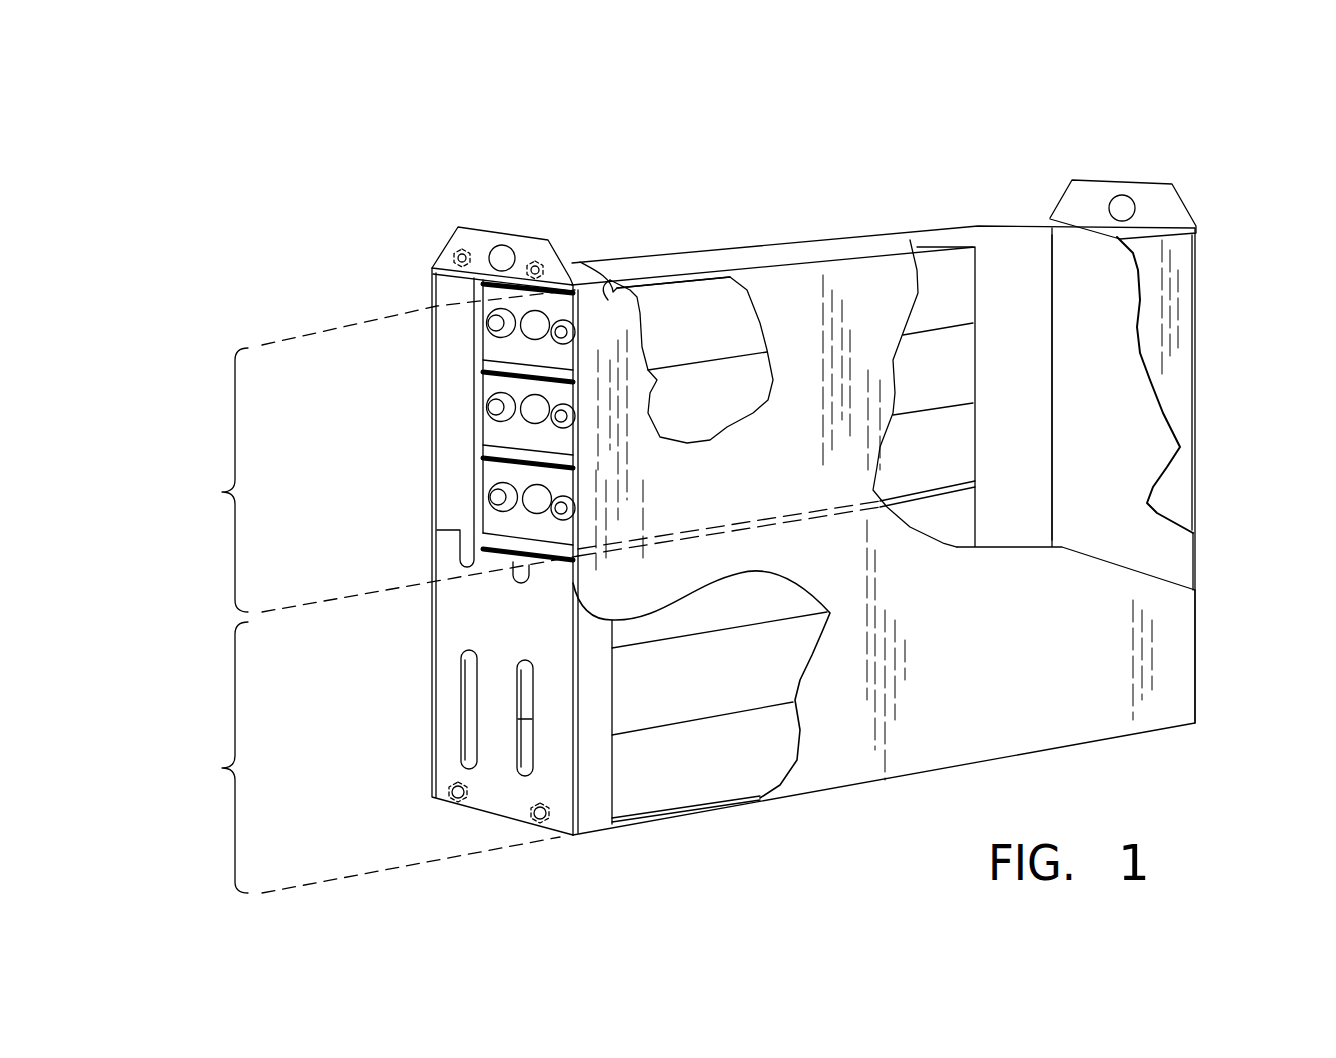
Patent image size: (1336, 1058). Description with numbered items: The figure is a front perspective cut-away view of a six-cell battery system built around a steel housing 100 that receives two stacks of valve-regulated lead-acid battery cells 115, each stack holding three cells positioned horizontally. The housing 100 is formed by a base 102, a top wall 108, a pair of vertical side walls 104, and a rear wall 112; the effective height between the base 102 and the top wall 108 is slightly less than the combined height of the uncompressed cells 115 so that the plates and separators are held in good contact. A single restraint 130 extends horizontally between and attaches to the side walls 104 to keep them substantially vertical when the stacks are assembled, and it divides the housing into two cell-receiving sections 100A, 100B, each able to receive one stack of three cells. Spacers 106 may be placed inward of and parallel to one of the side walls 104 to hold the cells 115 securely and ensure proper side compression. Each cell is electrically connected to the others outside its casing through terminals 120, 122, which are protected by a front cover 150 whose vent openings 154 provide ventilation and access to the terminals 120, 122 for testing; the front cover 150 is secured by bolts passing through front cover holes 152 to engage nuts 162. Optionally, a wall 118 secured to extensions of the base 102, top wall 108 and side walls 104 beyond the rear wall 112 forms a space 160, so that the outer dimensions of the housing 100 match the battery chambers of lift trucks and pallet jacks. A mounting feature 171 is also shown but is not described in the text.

The housing 100 is at (818, 124).
The section 100A is at (360, 451).
The section 100B is at (360, 724).
The base 102 is at (800, 798).
The vertical side walls 104 is at (1053, 732).
The spacers 106 is at (477, 298).
The top wall 108 is at (828, 252).
The rear wall 112 is at (955, 247).
The battery cells 115 is at (712, 326).
The wall 118 is at (1160, 566).
The terminals 120 is at (490, 323).
The terminals 122 is at (567, 330).
The restraint 130 is at (800, 520).
The front cover 150 is at (452, 768).
The front cover holes 152 is at (542, 823).
The vent openings 154 is at (458, 698).
The space 160 is at (1115, 489).
The nuts 162 is at (450, 253).
The mounting bracket 171 is at (502, 230).